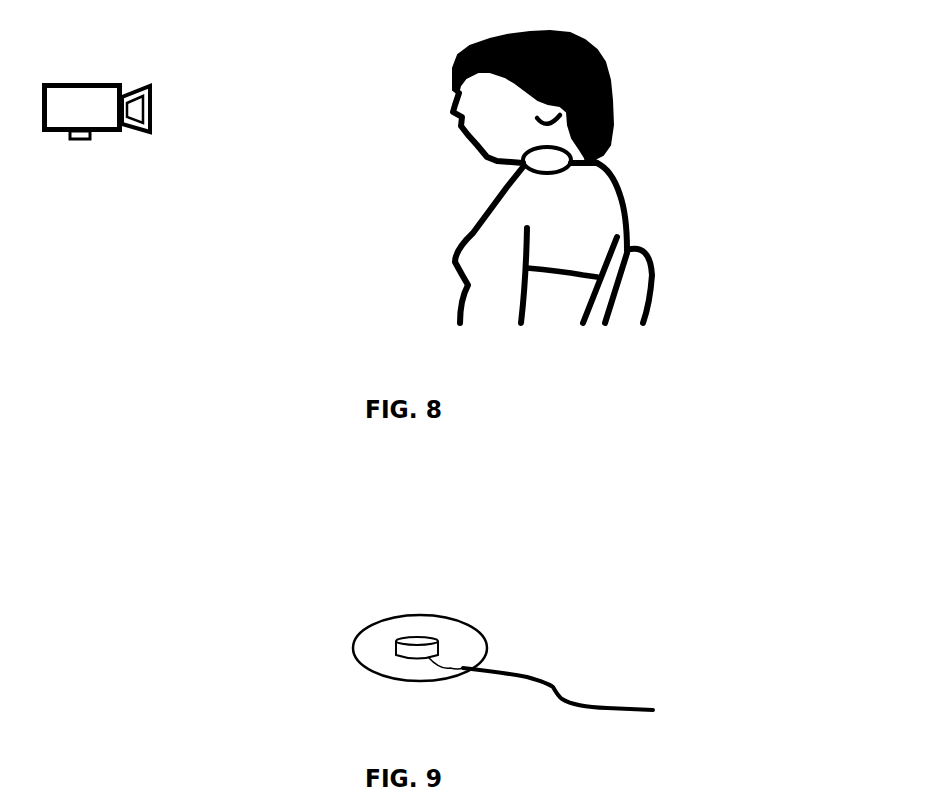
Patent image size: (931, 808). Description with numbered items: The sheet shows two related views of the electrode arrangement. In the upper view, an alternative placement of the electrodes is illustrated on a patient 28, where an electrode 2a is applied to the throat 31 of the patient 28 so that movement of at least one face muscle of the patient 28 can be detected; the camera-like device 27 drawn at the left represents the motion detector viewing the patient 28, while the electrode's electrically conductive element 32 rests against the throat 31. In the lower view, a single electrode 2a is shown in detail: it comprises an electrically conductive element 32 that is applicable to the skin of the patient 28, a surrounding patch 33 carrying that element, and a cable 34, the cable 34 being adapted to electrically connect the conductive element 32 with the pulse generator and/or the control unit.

In FIG. 8, the camera 27 is at (72, 162).
In FIG. 8, the patient 28 is at (649, 66).
In FIG. 8, the throat 31 is at (615, 154).
In FIG. 8, the electrically conductive element 32 is at (505, 176).
In FIG. 9, the electrically conductive element 32 is at (429, 634).
In FIG. 9, the adhesive patch 33 is at (490, 652).
In FIG. 9, the cable 34 is at (577, 696).
In FIG. 9, the electrode 2a is at (168, 549).